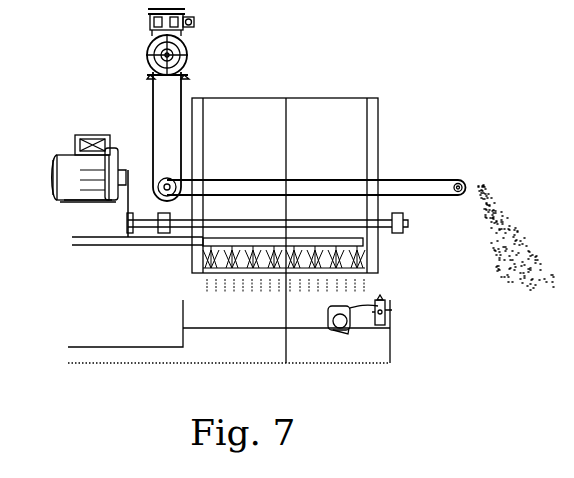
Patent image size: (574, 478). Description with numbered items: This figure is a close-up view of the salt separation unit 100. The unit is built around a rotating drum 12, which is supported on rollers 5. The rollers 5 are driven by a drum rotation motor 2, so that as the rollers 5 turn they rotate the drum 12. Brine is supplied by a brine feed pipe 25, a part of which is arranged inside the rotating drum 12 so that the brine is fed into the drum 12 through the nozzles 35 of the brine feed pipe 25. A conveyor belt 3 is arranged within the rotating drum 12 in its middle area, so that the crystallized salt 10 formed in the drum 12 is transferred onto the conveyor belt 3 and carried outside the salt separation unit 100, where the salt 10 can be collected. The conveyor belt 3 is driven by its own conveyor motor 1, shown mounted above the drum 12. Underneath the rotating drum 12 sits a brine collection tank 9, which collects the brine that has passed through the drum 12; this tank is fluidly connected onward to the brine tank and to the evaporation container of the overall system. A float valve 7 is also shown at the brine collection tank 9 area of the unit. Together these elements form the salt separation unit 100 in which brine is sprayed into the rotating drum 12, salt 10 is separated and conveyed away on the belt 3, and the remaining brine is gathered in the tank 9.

The salt separation unit 100 is at (361, 50).
The conveyor motor 1 is at (197, 43).
The drum rotation motor 2 is at (52, 155).
The conveyor belt 3 is at (419, 178).
The roller 5 is at (378, 207).
The float valve 7 is at (390, 298).
The brine collection tank 9 is at (229, 331).
The salt 10 is at (518, 237).
The rotating drum 12 is at (360, 118).
The brine feed pipe 25 is at (76, 247).
The nozzle 35 is at (198, 252).